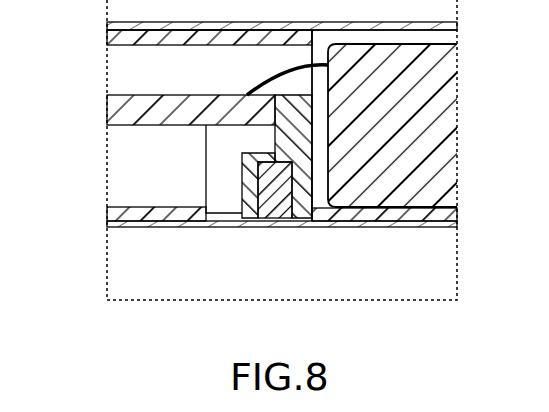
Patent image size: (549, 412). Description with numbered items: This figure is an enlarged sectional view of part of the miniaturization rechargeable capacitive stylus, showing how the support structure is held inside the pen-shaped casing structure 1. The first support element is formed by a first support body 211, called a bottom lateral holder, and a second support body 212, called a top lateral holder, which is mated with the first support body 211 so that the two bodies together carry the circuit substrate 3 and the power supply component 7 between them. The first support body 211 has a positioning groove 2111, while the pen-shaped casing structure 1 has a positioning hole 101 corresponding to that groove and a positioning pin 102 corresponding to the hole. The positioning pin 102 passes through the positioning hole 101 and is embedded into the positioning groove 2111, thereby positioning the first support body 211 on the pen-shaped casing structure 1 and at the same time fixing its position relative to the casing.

The pen-shaped casing structure 1 is at (134, 226).
The circuit substrate 3 is at (120, 97).
The power supply component 7 is at (457, 92).
The positioning hole 101 is at (308, 218).
The positioning pin 102 is at (268, 222).
The first support body 211 is at (121, 217).
The second support body 212 is at (130, 41).
The positioning groove 2111 is at (263, 157).